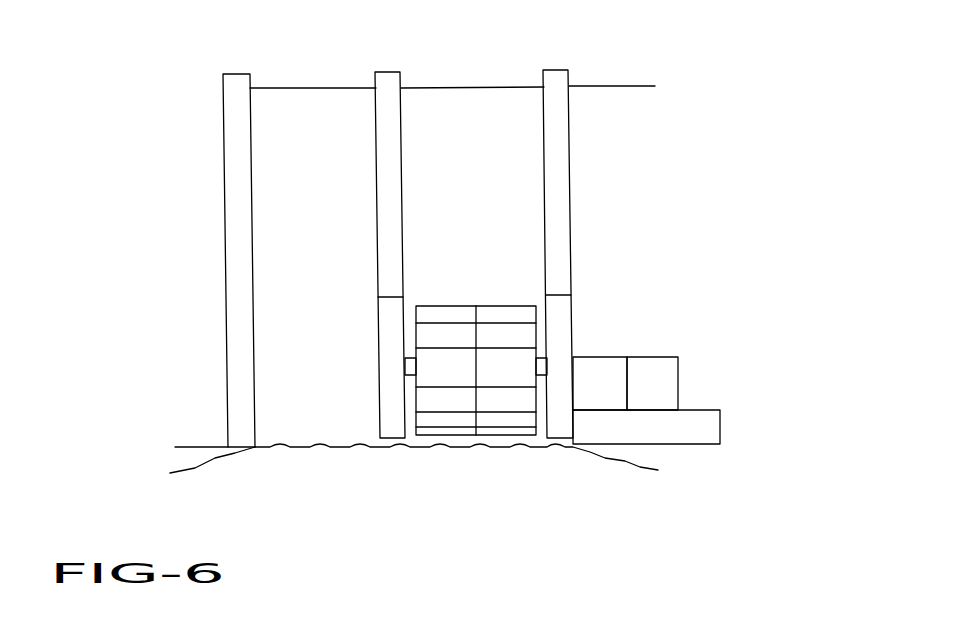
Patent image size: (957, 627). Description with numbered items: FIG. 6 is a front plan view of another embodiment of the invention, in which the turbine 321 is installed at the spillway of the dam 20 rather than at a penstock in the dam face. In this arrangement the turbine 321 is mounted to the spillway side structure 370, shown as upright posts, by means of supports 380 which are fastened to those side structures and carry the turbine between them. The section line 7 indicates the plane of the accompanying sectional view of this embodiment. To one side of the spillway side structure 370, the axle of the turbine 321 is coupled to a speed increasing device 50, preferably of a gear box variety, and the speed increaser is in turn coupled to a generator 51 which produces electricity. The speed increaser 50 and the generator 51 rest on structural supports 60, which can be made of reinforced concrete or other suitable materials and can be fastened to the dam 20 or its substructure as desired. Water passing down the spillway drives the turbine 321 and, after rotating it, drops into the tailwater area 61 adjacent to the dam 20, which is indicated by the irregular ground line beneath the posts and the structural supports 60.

The section line 7- 7 is at (568, 58).
The dam 20 is at (505, 165).
The spillway side structure 370 is at (390, 214).
The supports 380 is at (397, 308).
The turbine 321 is at (452, 420).
The speed increasing device 50 is at (613, 367).
The generator 51 is at (668, 370).
The structural supports 60 is at (695, 420).
The tailwater area 61 is at (625, 514).